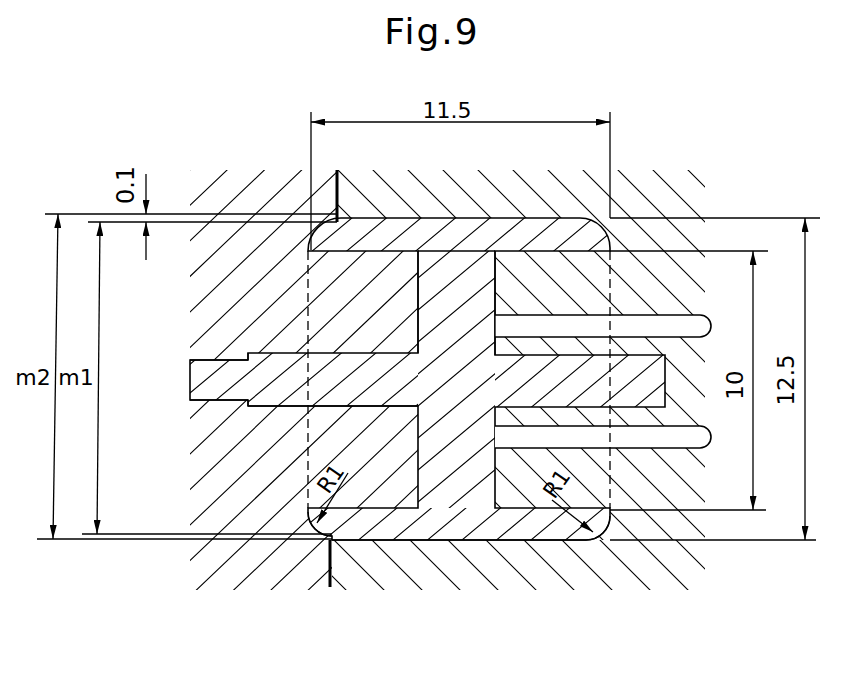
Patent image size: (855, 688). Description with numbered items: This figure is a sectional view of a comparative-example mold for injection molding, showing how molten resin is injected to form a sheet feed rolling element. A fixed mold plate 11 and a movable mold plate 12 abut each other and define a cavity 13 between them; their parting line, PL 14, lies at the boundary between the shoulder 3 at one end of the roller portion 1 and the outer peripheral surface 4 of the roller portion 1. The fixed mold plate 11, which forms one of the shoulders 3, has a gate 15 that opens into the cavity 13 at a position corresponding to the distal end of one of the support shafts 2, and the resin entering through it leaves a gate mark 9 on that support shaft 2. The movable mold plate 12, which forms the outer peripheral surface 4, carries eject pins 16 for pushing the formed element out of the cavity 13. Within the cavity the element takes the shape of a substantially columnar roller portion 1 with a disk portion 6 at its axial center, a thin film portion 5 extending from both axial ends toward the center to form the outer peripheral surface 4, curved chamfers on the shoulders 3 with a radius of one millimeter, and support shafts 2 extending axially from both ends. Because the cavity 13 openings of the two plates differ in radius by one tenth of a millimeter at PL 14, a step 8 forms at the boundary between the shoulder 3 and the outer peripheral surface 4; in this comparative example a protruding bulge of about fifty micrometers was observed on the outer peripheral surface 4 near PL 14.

The roller portion 1 is at (482, 542).
The support shafts 2 is at (242, 422).
The shoulders 3 is at (322, 541).
The outer peripheral surface 4 is at (518, 545).
The thin film portion 5 is at (397, 542).
The disk portion 6 is at (463, 292).
The step 8 is at (330, 546).
The gate mark 9 is at (243, 378).
The fixed mold plate 11 is at (247, 183).
The movable mold plate 12 is at (665, 187).
The cavity 13 is at (450, 250).
The PL 14 is at (331, 566).
The gate 15 is at (193, 377).
The eject pins 16 is at (683, 322).